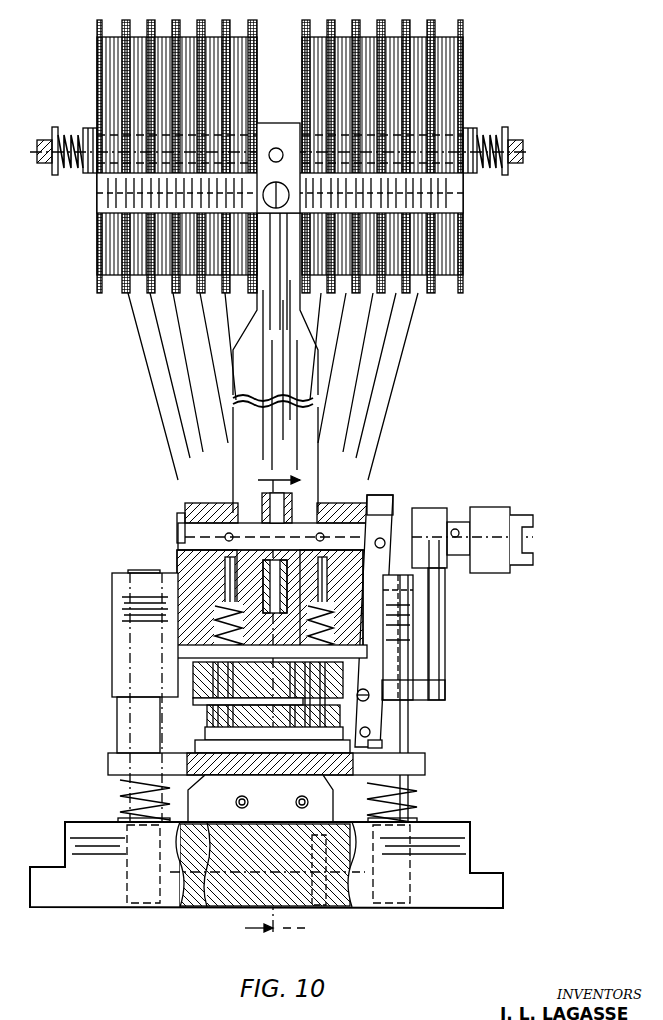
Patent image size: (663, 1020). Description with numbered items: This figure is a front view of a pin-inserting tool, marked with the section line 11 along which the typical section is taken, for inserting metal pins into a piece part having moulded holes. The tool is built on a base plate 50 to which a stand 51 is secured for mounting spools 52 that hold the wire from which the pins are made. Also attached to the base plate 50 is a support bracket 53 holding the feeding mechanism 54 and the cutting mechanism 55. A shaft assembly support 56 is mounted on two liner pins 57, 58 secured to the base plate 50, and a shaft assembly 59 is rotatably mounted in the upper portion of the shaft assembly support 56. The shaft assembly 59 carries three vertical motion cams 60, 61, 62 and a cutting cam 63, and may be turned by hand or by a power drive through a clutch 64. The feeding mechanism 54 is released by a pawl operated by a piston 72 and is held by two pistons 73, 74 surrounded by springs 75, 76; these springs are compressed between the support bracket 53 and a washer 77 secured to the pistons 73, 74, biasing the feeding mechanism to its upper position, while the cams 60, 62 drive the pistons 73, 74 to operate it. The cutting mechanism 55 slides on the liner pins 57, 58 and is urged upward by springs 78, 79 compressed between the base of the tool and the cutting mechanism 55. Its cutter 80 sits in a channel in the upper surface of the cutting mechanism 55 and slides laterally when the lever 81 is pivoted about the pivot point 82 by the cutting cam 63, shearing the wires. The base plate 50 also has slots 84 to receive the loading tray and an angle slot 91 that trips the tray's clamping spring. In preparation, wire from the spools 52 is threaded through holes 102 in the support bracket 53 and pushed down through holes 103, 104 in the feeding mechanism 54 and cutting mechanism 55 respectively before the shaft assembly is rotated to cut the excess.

The section line 11 is at (266, 706).
The base plate 50 is at (503, 892).
The stand 51 is at (320, 442).
The spools 52 is at (464, 244).
The support bracket 53 is at (368, 672).
The feeding mechanism 54 is at (377, 743).
The cutting mechanism 55 is at (275, 798).
The shaft assembly support 56 is at (111, 609).
The liner pin 57 is at (138, 570).
The liner pin 58 is at (410, 790).
The shaft assembly 59 is at (483, 514).
The vertical motion cam 60 is at (228, 500).
The vertical motion cam 61 is at (293, 500).
The vertical motion cam 62 is at (347, 510).
The cutting cam 63 is at (390, 500).
The clutch 64 is at (534, 540).
The piston 72 is at (158, 654).
The piston 73 is at (207, 600).
The piston 74 is at (331, 600).
The spring 75 is at (216, 626).
The spring 76 is at (332, 626).
The washer 77 is at (276, 603).
The spring 78 is at (123, 813).
The spring 79 is at (415, 808).
The cutter 80 is at (200, 747).
The lever 81 is at (380, 608).
The pivot point 82 is at (372, 727).
The slots 84 is at (207, 906).
The angle slot 91 is at (322, 906).
The holes 102 is at (195, 670).
The holes 103 is at (207, 722).
The holes 104 is at (133, 793).